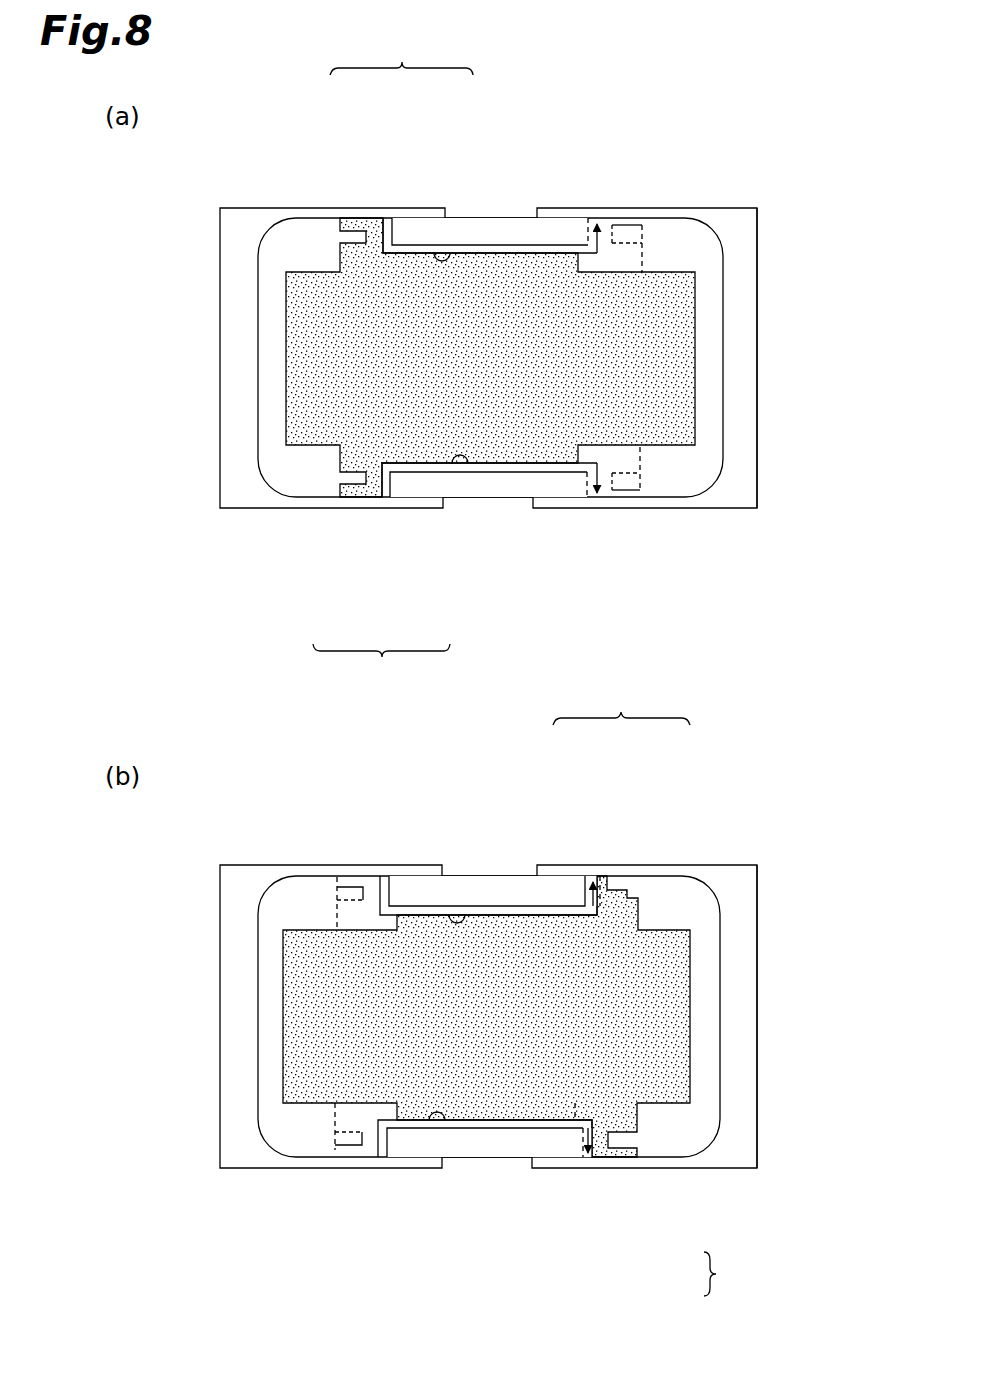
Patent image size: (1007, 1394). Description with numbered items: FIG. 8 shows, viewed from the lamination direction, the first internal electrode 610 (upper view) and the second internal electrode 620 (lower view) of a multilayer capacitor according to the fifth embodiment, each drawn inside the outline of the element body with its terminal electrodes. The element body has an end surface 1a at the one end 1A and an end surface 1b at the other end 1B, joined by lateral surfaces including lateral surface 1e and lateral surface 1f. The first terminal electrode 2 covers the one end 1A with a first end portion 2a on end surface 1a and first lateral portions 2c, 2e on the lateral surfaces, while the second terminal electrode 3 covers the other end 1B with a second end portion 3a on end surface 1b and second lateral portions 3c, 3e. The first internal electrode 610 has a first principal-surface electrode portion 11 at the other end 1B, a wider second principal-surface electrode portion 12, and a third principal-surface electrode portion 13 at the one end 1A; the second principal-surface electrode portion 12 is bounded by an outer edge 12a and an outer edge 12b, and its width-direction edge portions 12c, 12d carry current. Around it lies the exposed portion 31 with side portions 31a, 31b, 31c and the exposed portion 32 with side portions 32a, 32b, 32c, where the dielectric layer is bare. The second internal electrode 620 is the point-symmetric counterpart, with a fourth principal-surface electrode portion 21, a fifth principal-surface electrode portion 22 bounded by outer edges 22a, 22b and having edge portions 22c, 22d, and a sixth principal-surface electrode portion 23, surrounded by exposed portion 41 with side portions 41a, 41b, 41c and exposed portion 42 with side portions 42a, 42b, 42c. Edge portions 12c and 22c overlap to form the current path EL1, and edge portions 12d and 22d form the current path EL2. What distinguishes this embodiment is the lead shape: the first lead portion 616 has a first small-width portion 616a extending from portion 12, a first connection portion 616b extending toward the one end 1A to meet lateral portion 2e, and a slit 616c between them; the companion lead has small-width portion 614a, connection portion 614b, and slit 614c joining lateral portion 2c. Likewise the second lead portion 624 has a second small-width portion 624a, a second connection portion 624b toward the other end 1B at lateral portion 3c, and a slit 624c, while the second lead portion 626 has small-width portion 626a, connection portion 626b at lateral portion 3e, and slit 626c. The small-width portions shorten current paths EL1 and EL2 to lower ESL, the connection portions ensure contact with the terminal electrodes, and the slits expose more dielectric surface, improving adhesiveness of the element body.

The one end 1A is at (213, 230).
The other end 1B is at (770, 234).
The end surface 1a is at (258, 382).
The end surface 1b is at (724, 382).
The lateral surface 1e is at (508, 498).
The lateral surface 1f is at (515, 216).
The first terminal electrode 2 is at (243, 292).
The first end portion 2a is at (240, 470).
The first lateral portion 2c is at (302, 500).
The first lateral portion 2e is at (318, 212).
The second terminal electrode 3 is at (735, 284).
The second end portion 3a is at (738, 470).
The second lateral portion 3c is at (582, 503).
The second lateral portion 3e is at (548, 212).
The first principal-surface electrode portion 11 is at (650, 296).
The second principal-surface electrode portion 12 is at (487, 292).
The outer edge 12a is at (340, 236).
The outer edge 12b is at (581, 262).
The edge portion 12c is at (437, 460).
The edge portion 12d is at (574, 248).
The third principal-surface electrode portion 13 is at (323, 297).
The fourth principal-surface electrode portion 21 is at (303, 955).
The fifth principal-surface electrode portion 22 is at (478, 890).
The outer edge 22a is at (665, 900).
The outer edge 22b is at (360, 888).
The edge portion 22c is at (590, 1162).
The edge portion 22d is at (445, 878).
The sixth principal-surface electrode portion 23 is at (660, 993).
The exposed portion 31 is at (277, 342).
The side portion 31a is at (285, 430).
The side portion 31b is at (330, 460).
The side portion 31c is at (310, 257).
The exposed portion 32 is at (702, 338).
The side portion 32a is at (697, 430).
The side portion 32b is at (540, 483).
The side portion 32c is at (460, 248).
The exposed portion 41 is at (702, 1022).
The side portion 41a is at (692, 1110).
The side portion 41b is at (705, 1158).
The side portion 41c is at (642, 905).
The exposed portion 42 is at (275, 1017).
The side portion 42a is at (283, 1107).
The side portion 42b is at (458, 1160).
The side portion 42c is at (545, 895).
The first internal electrode 610 is at (683, 266).
The first small-width portion 614a is at (373, 483).
The first connection portion 614b is at (350, 492).
The slit 614c is at (342, 497).
The first lead portion 616 is at (393, 361).
The first small-width portion 616a is at (386, 240).
The first connection portion 616b is at (362, 240).
The slit 616c is at (352, 222).
The second internal electrode 620 is at (684, 927).
The second lead portion 624 is at (734, 1274).
The second small-width portion 624a is at (610, 1160).
The second connection portion 624b is at (622, 1157).
The slit 624c is at (647, 1150).
The second lead portion 626 is at (621, 706).
The second small-width portion 626a is at (630, 882).
The second connection portion 626b is at (614, 895).
The slit 626c is at (620, 930).
The current path EL1 is at (468, 472).
The current path EL2 is at (446, 250).